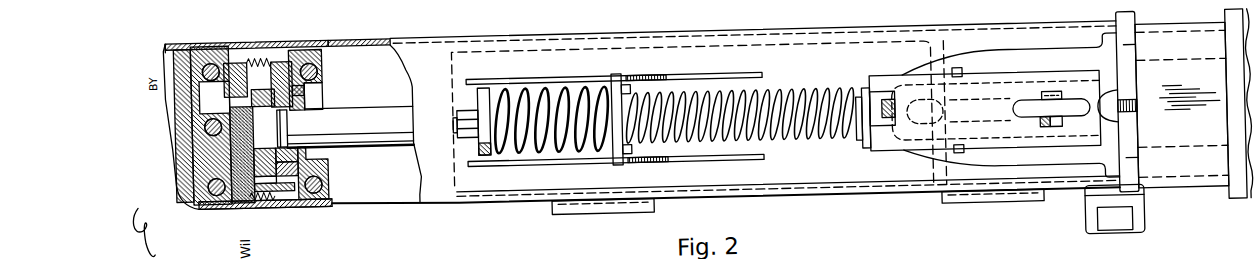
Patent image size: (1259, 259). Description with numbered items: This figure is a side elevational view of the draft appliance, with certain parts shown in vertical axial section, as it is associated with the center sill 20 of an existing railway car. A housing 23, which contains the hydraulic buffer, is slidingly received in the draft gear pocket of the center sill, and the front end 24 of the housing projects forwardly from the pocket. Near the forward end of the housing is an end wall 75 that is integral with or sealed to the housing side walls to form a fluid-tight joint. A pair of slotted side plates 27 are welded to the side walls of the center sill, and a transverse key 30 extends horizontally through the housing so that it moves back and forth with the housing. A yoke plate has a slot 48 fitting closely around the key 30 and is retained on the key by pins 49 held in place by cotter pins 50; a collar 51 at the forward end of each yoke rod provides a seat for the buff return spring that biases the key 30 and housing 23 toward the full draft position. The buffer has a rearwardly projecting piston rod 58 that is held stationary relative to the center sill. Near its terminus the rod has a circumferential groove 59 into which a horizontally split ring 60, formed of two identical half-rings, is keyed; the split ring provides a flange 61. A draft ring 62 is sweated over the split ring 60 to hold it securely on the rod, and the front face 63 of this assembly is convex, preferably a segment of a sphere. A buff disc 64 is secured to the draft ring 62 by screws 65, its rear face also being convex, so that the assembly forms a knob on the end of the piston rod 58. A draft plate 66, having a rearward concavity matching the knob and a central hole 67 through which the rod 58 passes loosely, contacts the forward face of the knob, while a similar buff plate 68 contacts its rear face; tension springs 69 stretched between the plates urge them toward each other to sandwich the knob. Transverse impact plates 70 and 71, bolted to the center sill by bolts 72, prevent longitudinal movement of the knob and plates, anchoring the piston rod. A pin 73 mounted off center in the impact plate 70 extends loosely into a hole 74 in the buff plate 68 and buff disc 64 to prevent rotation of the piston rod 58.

The center sill 20 is at (369, 46).
The housing 23 is at (457, 184).
The front end of the housing 24 is at (1167, 46).
The slotted side plates 27 is at (1050, 74).
The transverse key 30 is at (1037, 115).
The slot 48 is at (633, 85).
The pins 49 is at (1047, 142).
The cotter pins 50 is at (1060, 142).
The collar 51 is at (863, 151).
The piston rod 58 is at (368, 115).
The circumferential groove 59 is at (272, 130).
The split ring 60 is at (283, 153).
The flange 61 is at (267, 193).
The draft ring 62 is at (305, 92).
The front face of the draft ring and split ring assembly 63 is at (287, 158).
The buff disc 64 is at (197, 183).
The screws 65 is at (233, 87).
The draft plate 66 is at (281, 87).
The central hole 67 is at (325, 109).
The buff plate 68 is at (243, 199).
The tension springs 69 is at (247, 69).
The impact plate 70 is at (209, 42).
The impact plate 71 is at (311, 62).
The bolts 72 is at (203, 125).
The pin 73 is at (222, 100).
The hole 74 is at (200, 158).
The end wall 75 is at (933, 70).